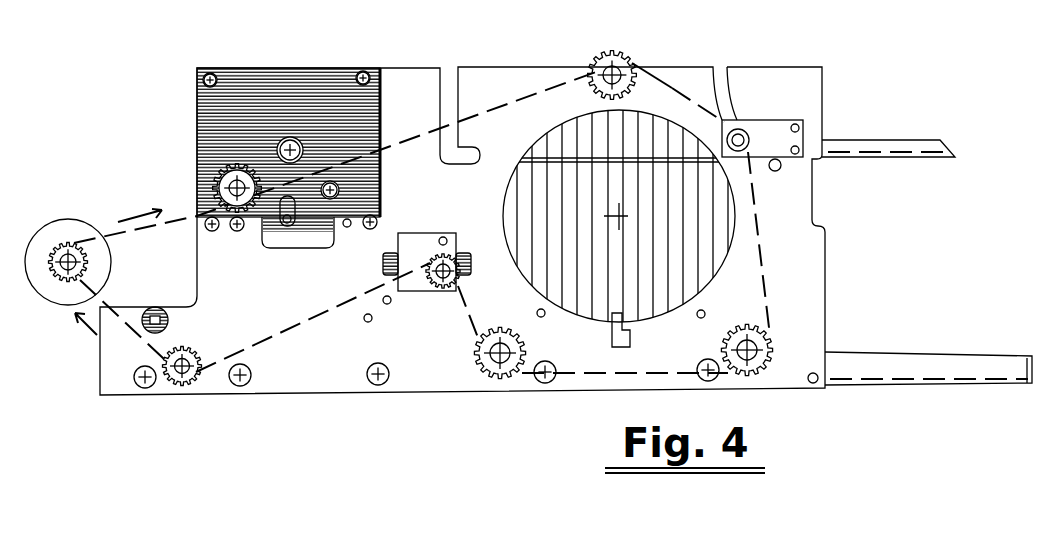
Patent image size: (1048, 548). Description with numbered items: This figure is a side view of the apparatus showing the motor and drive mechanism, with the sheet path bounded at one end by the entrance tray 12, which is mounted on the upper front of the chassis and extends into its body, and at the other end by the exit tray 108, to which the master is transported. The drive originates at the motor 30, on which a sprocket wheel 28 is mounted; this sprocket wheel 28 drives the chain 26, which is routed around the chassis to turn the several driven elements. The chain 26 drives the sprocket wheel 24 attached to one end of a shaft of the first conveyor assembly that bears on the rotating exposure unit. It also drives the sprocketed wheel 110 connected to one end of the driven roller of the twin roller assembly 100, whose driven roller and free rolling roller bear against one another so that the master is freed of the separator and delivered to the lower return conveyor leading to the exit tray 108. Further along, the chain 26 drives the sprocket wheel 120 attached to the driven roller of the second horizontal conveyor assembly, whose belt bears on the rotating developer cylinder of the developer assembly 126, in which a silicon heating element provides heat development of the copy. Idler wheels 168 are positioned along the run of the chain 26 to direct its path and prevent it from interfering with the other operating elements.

The entrance tray 12 is at (872, 141).
The sprocket wheel 24 is at (625, 58).
The chain 26 is at (345, 293).
The sprocket wheel 28 is at (92, 266).
The motor 30 is at (113, 256).
The twin roller assembly 100 is at (426, 242).
The exit tray 108 is at (898, 352).
The sprocketed wheel 110 is at (454, 289).
The sprocket wheel 120 is at (215, 164).
The developer assembly 126 is at (225, 122).
The idler wheels 168 is at (514, 333).